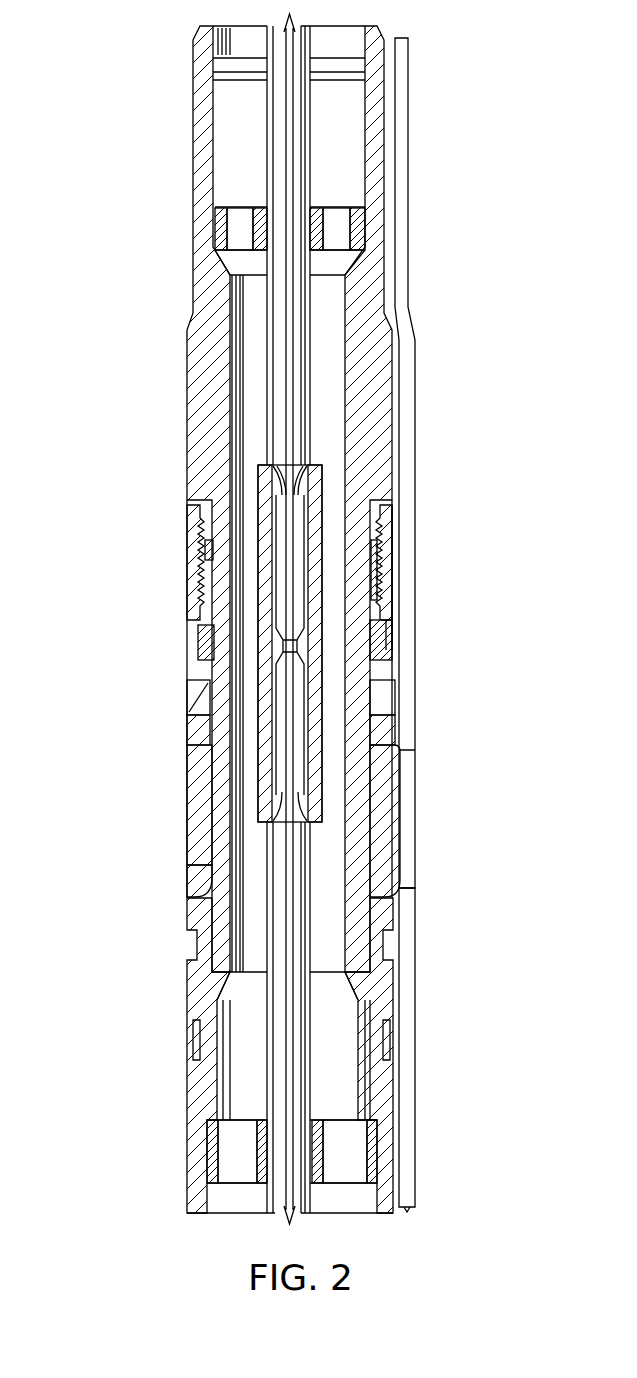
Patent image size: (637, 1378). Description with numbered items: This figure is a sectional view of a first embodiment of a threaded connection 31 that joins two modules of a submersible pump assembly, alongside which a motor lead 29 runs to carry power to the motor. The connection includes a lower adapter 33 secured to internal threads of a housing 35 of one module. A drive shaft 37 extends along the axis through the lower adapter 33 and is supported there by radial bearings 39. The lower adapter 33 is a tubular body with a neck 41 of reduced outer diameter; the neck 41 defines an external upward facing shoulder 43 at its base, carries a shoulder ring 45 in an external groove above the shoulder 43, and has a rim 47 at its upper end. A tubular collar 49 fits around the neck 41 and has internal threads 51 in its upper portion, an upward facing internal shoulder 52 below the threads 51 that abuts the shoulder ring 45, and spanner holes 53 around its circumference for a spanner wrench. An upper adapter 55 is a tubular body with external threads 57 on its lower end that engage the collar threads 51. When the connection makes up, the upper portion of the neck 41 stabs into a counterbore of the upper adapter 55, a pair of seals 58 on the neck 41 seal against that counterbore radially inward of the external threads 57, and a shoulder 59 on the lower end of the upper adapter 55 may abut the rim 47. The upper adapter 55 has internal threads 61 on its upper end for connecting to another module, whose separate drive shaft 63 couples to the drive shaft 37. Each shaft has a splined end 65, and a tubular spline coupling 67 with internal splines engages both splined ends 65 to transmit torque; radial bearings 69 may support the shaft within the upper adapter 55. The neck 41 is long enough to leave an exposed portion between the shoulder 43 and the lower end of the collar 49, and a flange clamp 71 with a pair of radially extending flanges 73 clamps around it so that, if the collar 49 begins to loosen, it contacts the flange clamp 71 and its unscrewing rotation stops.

The motor lead 29 is at (410, 955).
The threaded connection 31 is at (95, 645).
The lower adapter 33 is at (188, 983).
The housing 35 is at (188, 1142).
The drive shaft 37 is at (298, 1028).
The radial bearings 39 is at (330, 1115).
The neck 41 is at (190, 800).
The shoulder 43 is at (190, 875).
The shoulder ring 45 is at (200, 628).
The rim 47 is at (235, 548).
The collar 49 is at (200, 685).
The internal threads 51 is at (198, 572).
The internal shoulder 52 is at (382, 636).
The spanner holes 53 is at (200, 712).
The upper adapter 55 is at (186, 331).
The external threads 57 is at (380, 532).
The seals 58 is at (382, 573).
The shoulder 59 is at (378, 556).
The internal threads 61 is at (236, 130).
The drive shaft 63 is at (295, 125).
The splined end 65 is at (300, 505).
The spline coupling 67 is at (300, 470).
The radial bearings 69 is at (333, 205).
The flange clamp 71 is at (395, 778).
The flanges 73 is at (410, 830).